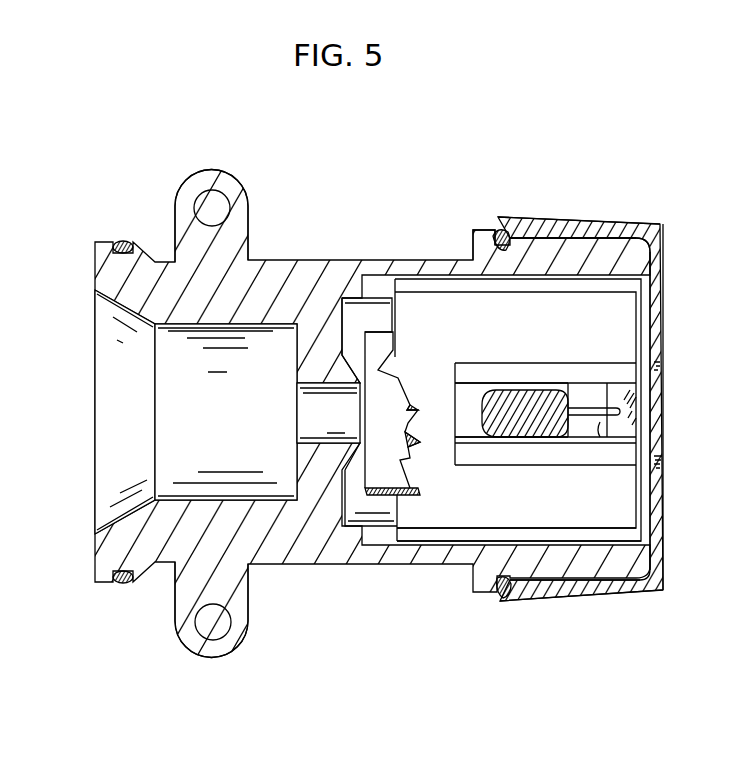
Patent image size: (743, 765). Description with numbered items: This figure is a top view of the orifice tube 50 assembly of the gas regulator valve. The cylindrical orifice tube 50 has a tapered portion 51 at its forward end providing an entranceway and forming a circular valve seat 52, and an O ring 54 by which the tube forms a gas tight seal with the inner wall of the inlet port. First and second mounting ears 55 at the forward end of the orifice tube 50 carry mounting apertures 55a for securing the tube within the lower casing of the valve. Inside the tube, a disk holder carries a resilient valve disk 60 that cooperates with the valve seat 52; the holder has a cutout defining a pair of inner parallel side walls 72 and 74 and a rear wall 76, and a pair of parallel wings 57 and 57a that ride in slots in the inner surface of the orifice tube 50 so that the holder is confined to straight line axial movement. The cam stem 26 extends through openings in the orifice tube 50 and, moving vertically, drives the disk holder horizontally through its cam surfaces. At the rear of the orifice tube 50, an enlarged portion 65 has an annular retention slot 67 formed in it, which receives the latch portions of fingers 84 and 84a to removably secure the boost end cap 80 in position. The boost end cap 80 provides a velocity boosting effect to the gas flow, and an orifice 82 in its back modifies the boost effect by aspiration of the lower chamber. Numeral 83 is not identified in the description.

The cam stem 26 is at (552, 392).
The orifice tube 50 is at (353, 253).
The tapered portion 51 is at (105, 378).
The valve seat 52 is at (313, 417).
The O ring 54 is at (119, 242).
The mounting ears 55 is at (243, 180).
The mounting apertures 55a is at (212, 208).
The wing 57 is at (433, 279).
The wing 57a is at (462, 535).
The valve disk 60 is at (391, 418).
The enlarged portion 65 is at (476, 230).
The annular retention slot 67 is at (497, 250).
The inner parallel side wall 72 is at (473, 440).
The inner parallel side wall 74 is at (487, 383).
The rear wall 76 is at (600, 432).
The boost end cap 80 is at (625, 215).
The orifice 82 is at (658, 390).
The cap outer wall 83 is at (666, 298).
The finger 84 is at (547, 217).
The finger 84a is at (593, 439).